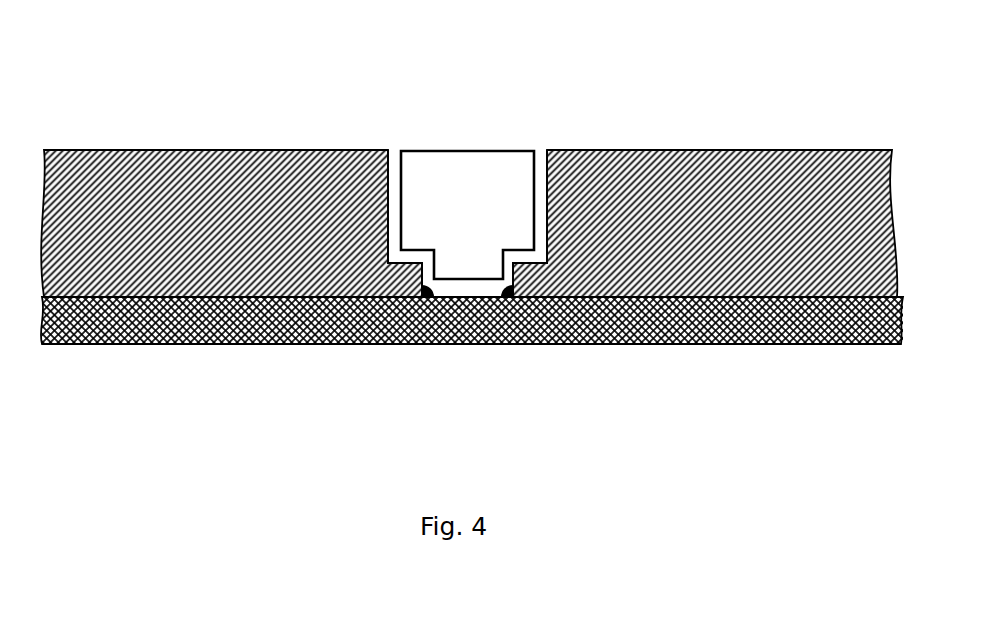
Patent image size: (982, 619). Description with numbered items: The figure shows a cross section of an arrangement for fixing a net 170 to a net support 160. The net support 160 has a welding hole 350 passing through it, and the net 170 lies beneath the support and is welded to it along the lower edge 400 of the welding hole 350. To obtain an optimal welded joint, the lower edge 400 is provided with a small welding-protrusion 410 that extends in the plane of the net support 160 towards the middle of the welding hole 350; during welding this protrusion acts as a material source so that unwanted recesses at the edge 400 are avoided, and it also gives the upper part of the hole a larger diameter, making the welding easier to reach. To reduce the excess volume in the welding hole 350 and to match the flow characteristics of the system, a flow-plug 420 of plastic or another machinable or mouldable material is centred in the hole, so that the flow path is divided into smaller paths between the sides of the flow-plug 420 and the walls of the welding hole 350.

The net support 160 is at (663, 158).
The net 170 is at (753, 343).
The welding-hole 350 is at (397, 160).
The lower edge 400 is at (388, 150).
The welding-protrusion 410 is at (418, 282).
The flow-plug 420 is at (445, 150).